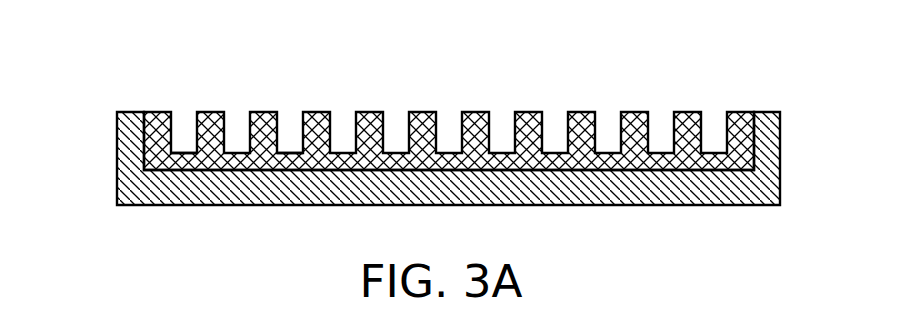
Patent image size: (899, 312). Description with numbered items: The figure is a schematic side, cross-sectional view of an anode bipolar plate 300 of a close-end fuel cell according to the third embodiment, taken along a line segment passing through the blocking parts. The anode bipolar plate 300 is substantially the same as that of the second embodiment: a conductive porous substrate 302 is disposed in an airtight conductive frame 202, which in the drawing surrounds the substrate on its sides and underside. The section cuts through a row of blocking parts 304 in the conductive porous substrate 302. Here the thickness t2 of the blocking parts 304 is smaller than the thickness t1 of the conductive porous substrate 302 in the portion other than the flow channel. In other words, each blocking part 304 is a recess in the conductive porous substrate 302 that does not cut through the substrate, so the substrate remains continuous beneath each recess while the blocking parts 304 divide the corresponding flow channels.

The anode bipolar plate 300 is at (116, 58).
The airtight conductive frame 202 is at (772, 154).
The conductive porous substrate 302 is at (742, 118).
The blocking parts 304 is at (188, 152).
The thickness of the conductive porous substrate t1 is at (112, 170).
The thickness of the blocking parts t2 is at (347, 182).